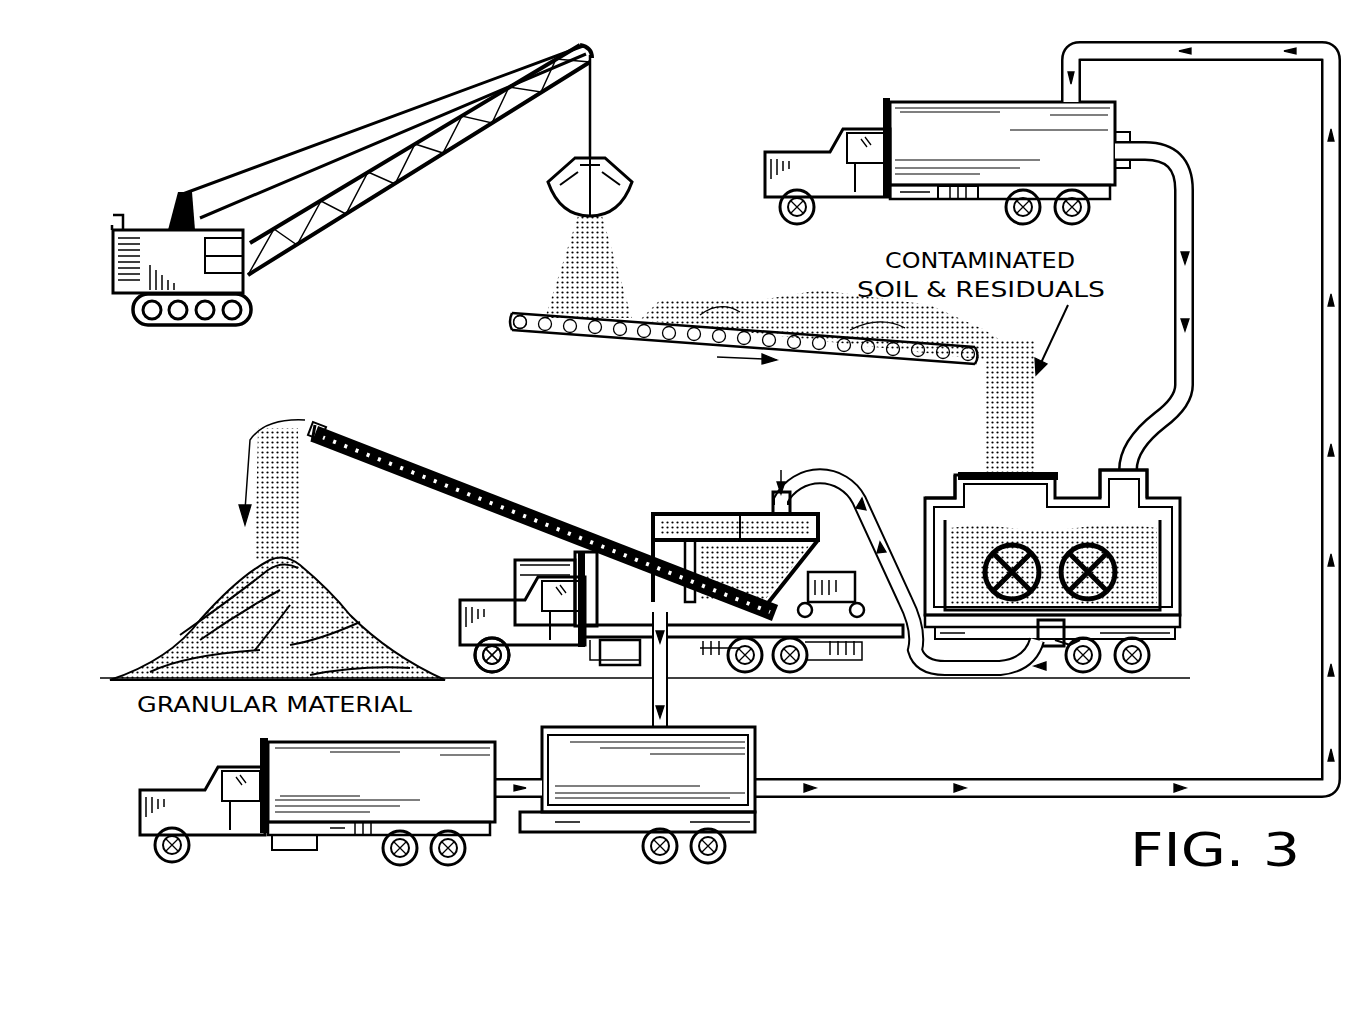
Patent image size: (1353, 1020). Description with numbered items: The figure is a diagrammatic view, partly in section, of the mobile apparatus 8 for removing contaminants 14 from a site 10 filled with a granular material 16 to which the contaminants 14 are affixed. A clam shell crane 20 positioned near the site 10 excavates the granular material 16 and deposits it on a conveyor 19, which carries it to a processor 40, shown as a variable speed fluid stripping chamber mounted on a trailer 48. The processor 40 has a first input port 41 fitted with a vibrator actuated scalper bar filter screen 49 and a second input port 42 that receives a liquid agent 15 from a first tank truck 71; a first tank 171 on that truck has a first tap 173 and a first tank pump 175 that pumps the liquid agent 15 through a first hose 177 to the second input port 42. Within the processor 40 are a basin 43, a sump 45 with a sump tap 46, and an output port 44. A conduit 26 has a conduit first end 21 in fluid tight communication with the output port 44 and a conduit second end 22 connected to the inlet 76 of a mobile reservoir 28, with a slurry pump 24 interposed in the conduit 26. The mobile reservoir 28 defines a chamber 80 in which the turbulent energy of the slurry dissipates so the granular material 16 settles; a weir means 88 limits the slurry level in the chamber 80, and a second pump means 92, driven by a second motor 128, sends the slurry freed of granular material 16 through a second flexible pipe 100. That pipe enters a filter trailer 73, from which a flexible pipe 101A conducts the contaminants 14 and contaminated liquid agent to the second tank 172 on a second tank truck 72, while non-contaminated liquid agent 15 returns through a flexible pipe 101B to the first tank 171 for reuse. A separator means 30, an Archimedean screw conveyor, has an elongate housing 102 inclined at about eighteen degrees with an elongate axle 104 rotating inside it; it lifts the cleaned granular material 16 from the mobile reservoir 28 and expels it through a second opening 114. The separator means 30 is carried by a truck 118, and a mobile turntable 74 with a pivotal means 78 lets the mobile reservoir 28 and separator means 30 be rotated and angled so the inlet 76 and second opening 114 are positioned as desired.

The mobile apparatus 8 is at (634, 85).
The site 10 is at (437, 81).
The contaminants 14 is at (762, 314).
The liquid agent 15 is at (1125, 140).
The granular material 16 is at (808, 312).
The conveyor 19 is at (512, 320).
The clam shell crane 20 is at (143, 230).
The conduit first end 21 is at (1018, 676).
The conduit second end 22 is at (800, 452).
The slurry pump 24 is at (1040, 662).
The conduit means 26 is at (924, 676).
The mobile reservoir means 28 is at (720, 513).
The separator means 30 is at (416, 442).
The processor means 40 is at (1176, 470).
The first input port 41 is at (932, 500).
The second input port 42 is at (1110, 470).
The basin 43 is at (1160, 575).
The output port 44 is at (1062, 672).
The sump 45 is at (1172, 505).
The sump tap 46 is at (1182, 605).
The trailer 48 is at (1185, 645).
The filter screen 49 is at (966, 475).
The first tank truck 71 is at (943, 102).
The second tank truck 72 is at (148, 792).
The filter trailer 73 is at (738, 760).
The mobile turntable 74 is at (705, 662).
The inlet 76 is at (771, 500).
The pivotal means 78 is at (768, 675).
The chamber 80 is at (685, 512).
The weir means 88 is at (654, 540).
The second pump means 92 is at (596, 668).
The second flexible pipe 100 is at (652, 688).
The contaminant conduit 101A is at (515, 778).
The recycle conduit 101B is at (786, 784).
The elongate housing 102 is at (452, 470).
The elongate axle 104 is at (510, 495).
The second opening 114 is at (318, 425).
The truck 118 is at (500, 612).
The second motor 128 is at (530, 657).
The first tank 171 is at (917, 102).
The second tank 172 is at (330, 755).
The first tap 173 is at (1160, 165).
The first tank pump 175 is at (962, 200).
The first hose 177 is at (1192, 282).